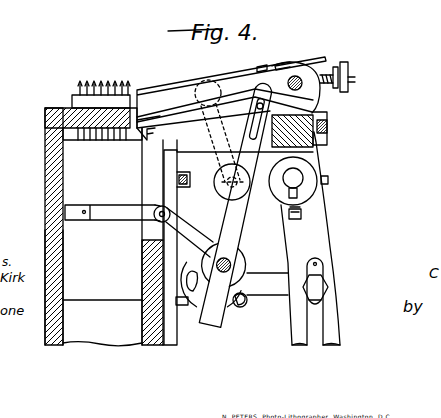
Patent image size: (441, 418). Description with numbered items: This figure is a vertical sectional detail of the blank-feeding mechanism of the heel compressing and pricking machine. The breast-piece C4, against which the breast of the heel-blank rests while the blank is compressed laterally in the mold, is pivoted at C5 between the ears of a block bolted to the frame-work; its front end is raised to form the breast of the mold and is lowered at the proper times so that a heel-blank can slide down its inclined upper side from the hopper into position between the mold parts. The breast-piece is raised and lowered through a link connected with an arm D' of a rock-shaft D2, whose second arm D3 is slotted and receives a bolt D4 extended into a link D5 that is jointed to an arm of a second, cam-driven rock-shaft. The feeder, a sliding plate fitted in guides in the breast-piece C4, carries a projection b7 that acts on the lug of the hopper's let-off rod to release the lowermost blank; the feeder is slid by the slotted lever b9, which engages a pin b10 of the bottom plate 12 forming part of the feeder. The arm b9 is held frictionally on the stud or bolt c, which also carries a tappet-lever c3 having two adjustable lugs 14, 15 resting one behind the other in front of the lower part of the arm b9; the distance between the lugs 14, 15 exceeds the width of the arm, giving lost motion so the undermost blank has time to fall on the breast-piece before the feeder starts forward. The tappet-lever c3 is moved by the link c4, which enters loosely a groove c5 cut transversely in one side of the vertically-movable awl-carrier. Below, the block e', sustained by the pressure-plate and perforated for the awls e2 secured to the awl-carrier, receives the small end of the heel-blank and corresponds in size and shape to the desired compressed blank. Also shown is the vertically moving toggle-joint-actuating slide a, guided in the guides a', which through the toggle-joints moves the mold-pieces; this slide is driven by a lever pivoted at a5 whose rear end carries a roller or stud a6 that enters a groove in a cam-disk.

The toggle-joint-actuating slide a is at (88, 227).
The guides a' is at (40, 287).
The pivot a5 is at (355, 80).
The roller or stud a6 is at (336, 68).
The projection b7 is at (315, 62).
The slotted lever b9 is at (235, 205).
The pin b10 is at (257, 106).
The stud or bolt c is at (230, 262).
The tappet-lever c3 is at (196, 246).
The breast-piece C4 is at (160, 98).
The link c4 is at (117, 169).
The pivot C5 is at (296, 76).
The groove c5 is at (75, 209).
The block e' is at (88, 99).
The awls e2 is at (118, 87).
The bottom plate 12 is at (316, 98).
The lug 14 is at (246, 303).
The lug 15 is at (178, 283).
The arm D' is at (218, 185).
The rock-shaft D2 is at (301, 178).
The second arm D3 is at (322, 217).
The bolt D4 is at (323, 288).
The link D5 is at (268, 284).